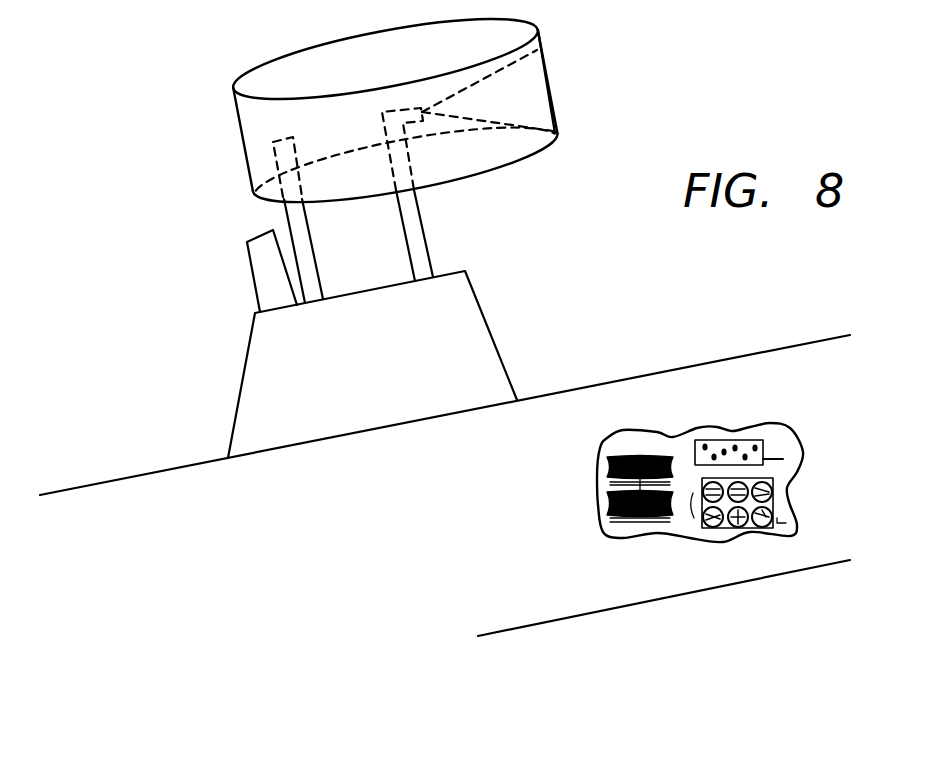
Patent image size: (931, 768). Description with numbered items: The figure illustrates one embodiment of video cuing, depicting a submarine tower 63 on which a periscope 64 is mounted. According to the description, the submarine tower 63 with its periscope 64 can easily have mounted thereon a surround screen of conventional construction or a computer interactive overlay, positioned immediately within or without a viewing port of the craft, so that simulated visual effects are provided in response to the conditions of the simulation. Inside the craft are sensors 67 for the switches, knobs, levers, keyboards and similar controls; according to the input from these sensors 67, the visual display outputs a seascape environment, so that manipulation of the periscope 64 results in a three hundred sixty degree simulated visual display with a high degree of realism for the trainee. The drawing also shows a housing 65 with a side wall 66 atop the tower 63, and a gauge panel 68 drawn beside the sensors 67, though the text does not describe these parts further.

The submarine tower 63 is at (472, 326).
The periscope 64 is at (421, 112).
The reflector housing 65 is at (478, 158).
The housing side wall 66 is at (533, 83).
The sensors 67 is at (697, 446).
The gauge panel 68 is at (777, 509).